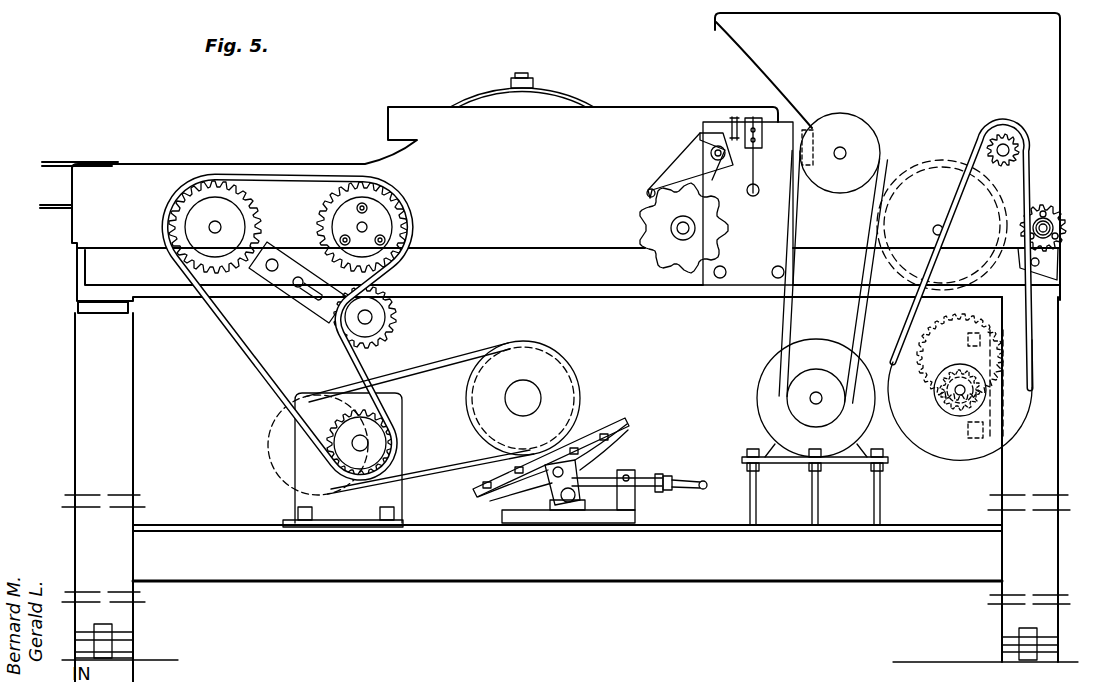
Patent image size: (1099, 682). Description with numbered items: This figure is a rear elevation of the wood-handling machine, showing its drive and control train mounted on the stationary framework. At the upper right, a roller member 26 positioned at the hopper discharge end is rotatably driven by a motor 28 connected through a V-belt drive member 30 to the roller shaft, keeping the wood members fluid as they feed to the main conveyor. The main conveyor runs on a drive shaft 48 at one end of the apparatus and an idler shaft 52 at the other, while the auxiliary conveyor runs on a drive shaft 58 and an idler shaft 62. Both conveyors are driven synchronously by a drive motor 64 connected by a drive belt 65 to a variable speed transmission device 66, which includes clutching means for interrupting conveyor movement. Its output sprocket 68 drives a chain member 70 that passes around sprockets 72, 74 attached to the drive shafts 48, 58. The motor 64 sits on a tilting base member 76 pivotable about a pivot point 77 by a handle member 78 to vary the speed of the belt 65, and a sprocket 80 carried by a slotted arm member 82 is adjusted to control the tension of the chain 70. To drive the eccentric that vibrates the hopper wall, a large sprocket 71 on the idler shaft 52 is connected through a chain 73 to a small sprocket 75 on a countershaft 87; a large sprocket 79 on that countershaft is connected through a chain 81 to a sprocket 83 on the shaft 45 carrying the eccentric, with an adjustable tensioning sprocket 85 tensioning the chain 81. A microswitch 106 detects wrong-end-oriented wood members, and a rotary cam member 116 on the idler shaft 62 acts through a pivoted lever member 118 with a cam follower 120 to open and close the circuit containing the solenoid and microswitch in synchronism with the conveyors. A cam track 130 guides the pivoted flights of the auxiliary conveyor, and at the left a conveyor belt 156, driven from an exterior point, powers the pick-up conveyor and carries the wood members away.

The roller member 26 is at (842, 151).
The motor 28 is at (760, 386).
The V-belt drive member 30 is at (790, 332).
The shaft 45 is at (1010, 150).
The shaft 48 is at (212, 227).
The shaft 52 is at (934, 227).
The shaft 58 is at (367, 227).
The shaft 62 is at (690, 230).
The drive motor 64 is at (523, 345).
The drive belt 65 is at (427, 373).
The variable speed transmission device 66 is at (305, 440).
The output sprocket 68 is at (372, 443).
The chain member 70 is at (233, 336).
The large sprocket 71 is at (943, 160).
The sprocket 72 is at (190, 210).
The chain 73 is at (926, 345).
The sprocket 74 is at (385, 220).
The small sprocket 75 is at (940, 391).
The tilting base member 76 is at (476, 492).
The pivot point 77 is at (570, 502).
The handle member 78 is at (640, 479).
The large sprocket 79 is at (956, 454).
The sprocket 80 is at (398, 317).
The chain 81 is at (932, 267).
The arm member 82 is at (312, 303).
The sprocket 83 is at (1005, 145).
The adjustable tensioning sprocket 85 is at (1055, 216).
The countershaft 87 is at (957, 394).
The microswitch 106 is at (763, 135).
The rotary cam member 116 is at (712, 210).
The pivoted lever member 118 is at (672, 179).
The cam follower 120 is at (647, 186).
The cam track 130 is at (484, 90).
The conveyor belt 156 is at (62, 204).